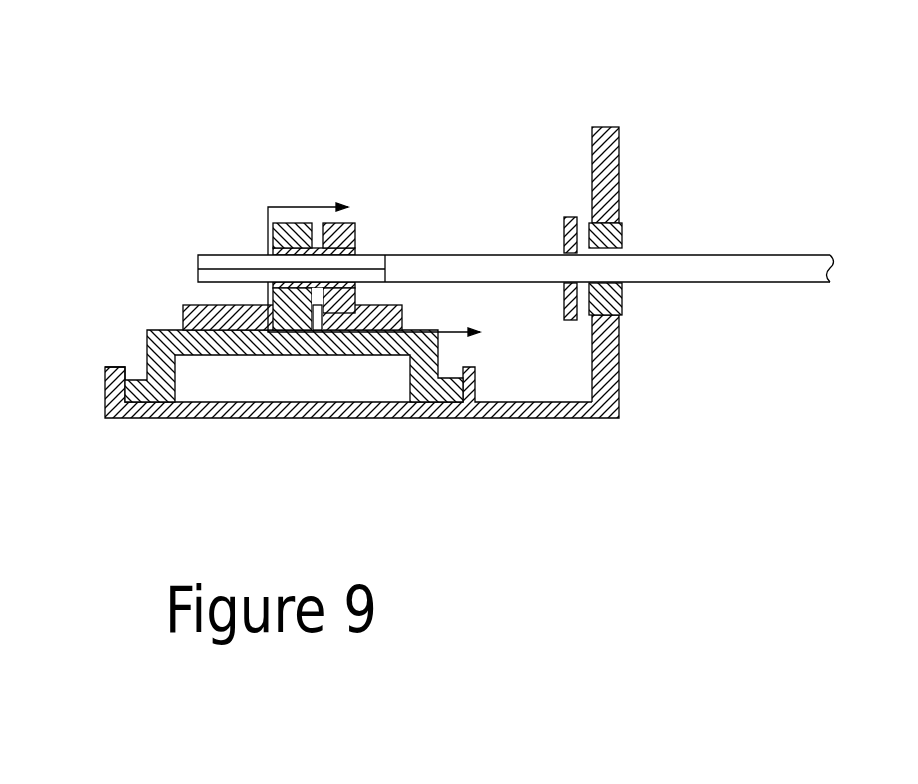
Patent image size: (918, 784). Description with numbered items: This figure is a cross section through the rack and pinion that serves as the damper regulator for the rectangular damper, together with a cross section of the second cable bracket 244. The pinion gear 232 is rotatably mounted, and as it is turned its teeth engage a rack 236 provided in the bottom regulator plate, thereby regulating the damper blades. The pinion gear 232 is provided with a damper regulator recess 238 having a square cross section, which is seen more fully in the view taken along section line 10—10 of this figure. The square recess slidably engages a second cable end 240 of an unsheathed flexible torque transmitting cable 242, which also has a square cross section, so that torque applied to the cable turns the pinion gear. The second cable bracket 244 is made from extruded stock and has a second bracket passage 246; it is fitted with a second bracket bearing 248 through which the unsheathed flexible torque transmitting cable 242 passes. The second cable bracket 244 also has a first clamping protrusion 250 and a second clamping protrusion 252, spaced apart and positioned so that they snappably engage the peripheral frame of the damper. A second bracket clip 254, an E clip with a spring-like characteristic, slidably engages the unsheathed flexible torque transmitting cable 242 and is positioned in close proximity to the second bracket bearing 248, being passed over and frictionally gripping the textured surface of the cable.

The section line 10— 10 is at (395, 258).
The pinion gear 232 is at (358, 100).
The rack 236 is at (347, 320).
The damper regulator recess 238 is at (268, 255).
The second cable end 240 is at (360, 255).
The unsheathed flexible torque transmitting cable 242 is at (475, 272).
The second cable bracket 244 is at (686, 448).
The second bracket passage 246 is at (627, 220).
The second bracket bearing 248 is at (622, 237).
The first clamping protrusion 250 is at (468, 380).
The second clamping protrusion 252 is at (128, 368).
The second bracket clip 254 is at (565, 227).